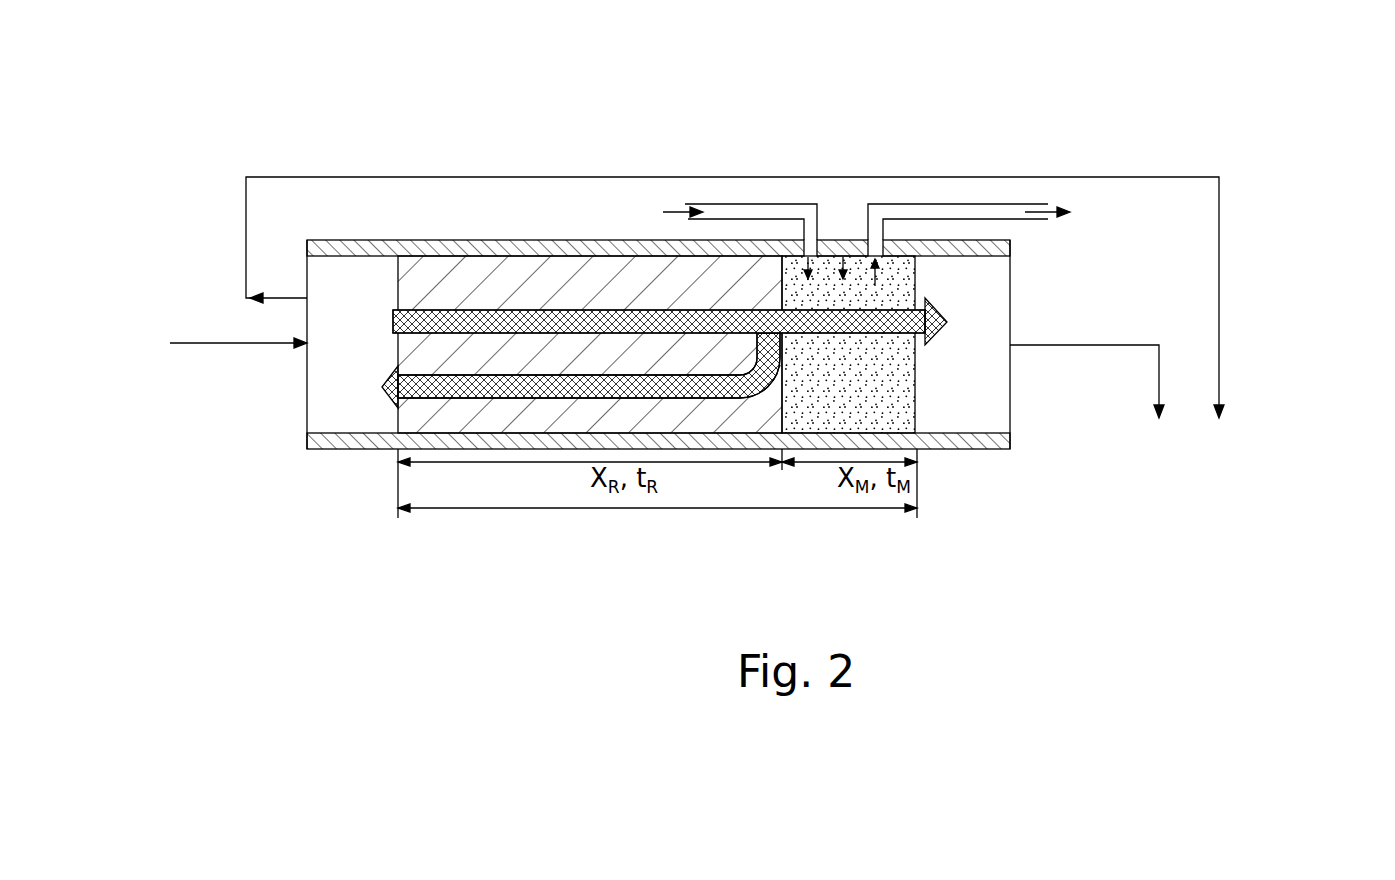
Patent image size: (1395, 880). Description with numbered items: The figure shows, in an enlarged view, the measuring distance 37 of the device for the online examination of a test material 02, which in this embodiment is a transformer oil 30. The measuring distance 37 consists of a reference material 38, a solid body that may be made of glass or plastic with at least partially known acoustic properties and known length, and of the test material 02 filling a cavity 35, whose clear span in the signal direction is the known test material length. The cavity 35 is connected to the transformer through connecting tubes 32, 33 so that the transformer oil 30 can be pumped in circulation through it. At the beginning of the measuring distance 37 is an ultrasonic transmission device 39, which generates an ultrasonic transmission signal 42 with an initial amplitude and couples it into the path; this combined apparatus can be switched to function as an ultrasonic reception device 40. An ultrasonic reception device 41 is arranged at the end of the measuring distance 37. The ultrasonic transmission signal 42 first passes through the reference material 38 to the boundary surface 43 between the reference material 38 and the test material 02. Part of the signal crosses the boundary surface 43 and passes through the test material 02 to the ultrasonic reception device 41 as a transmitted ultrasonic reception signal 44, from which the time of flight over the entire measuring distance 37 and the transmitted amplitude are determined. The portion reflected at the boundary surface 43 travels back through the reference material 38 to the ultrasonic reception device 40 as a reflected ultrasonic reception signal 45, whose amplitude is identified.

The transformer oil 30 is at (869, 395).
The test material 02 is at (1015, 493).
The connecting tube 32 is at (982, 213).
The connecting tube 33 is at (752, 212).
The cavity 35 is at (838, 272).
The measuring distance 37 is at (782, 513).
The reference material 38 is at (656, 295).
The ultrasonic transmission device 39 is at (437, 413).
The ultrasonic reception device 40 is at (328, 347).
The ultrasonic reception device 41 is at (1000, 283).
The ultrasonic transmission signal 42 is at (392, 308).
The boundary surface 43 is at (790, 377).
The transmitted ultrasonic reception signal 44 is at (940, 337).
The reflected ultrasonic reception signal 45 is at (385, 384).